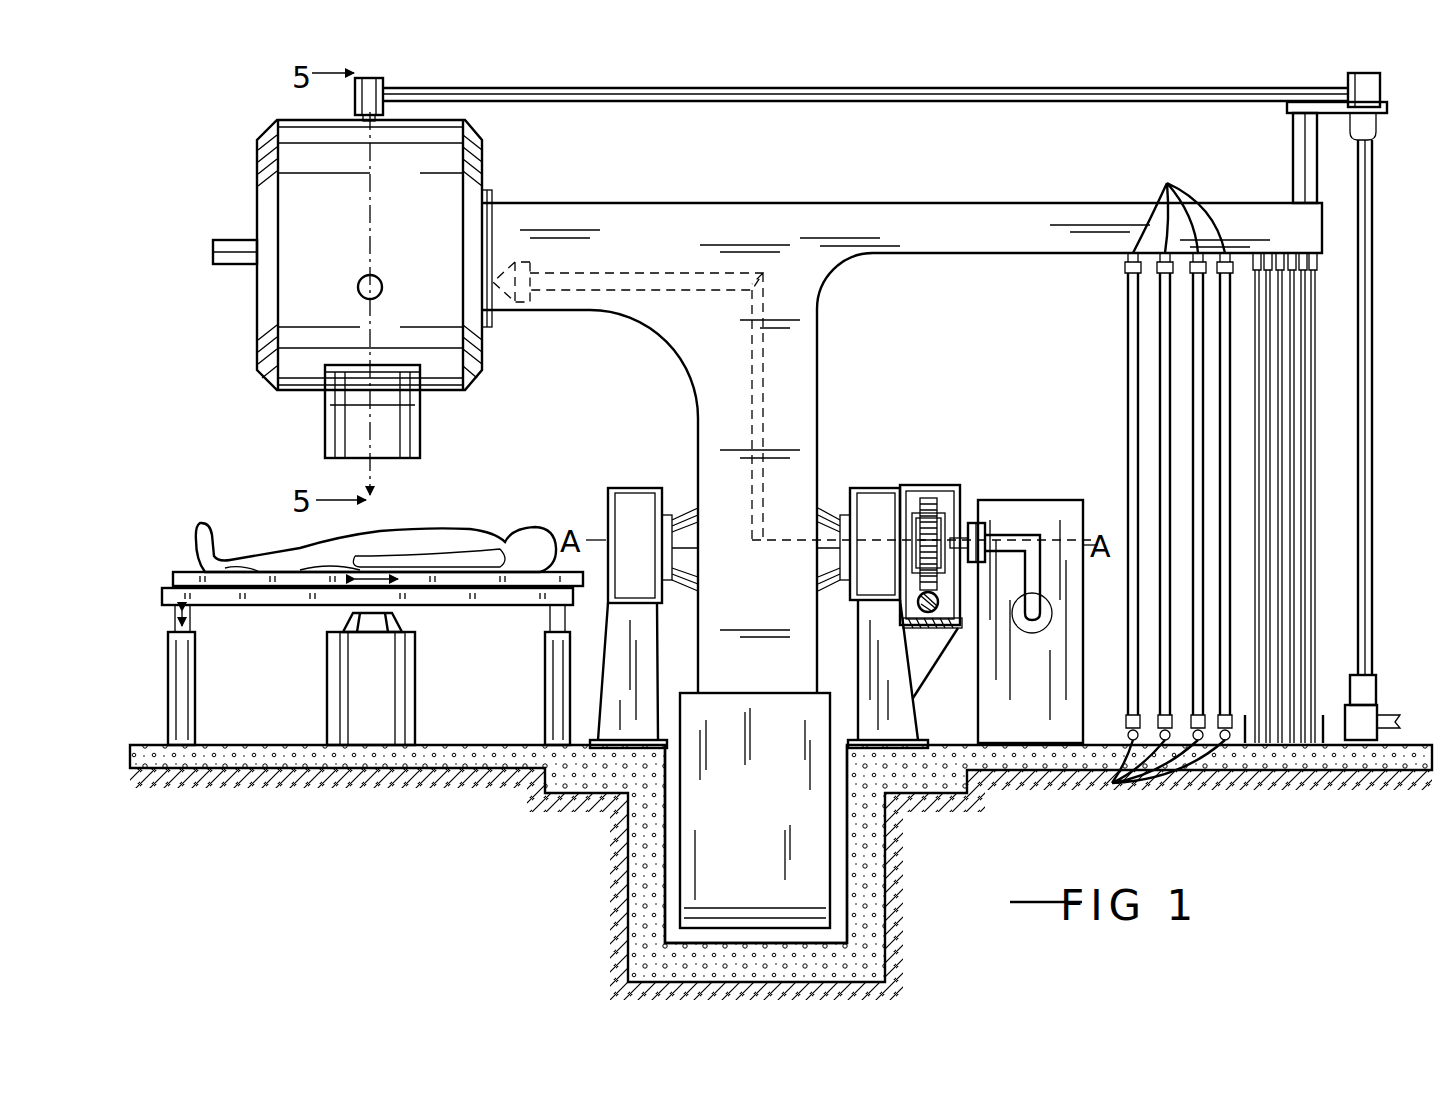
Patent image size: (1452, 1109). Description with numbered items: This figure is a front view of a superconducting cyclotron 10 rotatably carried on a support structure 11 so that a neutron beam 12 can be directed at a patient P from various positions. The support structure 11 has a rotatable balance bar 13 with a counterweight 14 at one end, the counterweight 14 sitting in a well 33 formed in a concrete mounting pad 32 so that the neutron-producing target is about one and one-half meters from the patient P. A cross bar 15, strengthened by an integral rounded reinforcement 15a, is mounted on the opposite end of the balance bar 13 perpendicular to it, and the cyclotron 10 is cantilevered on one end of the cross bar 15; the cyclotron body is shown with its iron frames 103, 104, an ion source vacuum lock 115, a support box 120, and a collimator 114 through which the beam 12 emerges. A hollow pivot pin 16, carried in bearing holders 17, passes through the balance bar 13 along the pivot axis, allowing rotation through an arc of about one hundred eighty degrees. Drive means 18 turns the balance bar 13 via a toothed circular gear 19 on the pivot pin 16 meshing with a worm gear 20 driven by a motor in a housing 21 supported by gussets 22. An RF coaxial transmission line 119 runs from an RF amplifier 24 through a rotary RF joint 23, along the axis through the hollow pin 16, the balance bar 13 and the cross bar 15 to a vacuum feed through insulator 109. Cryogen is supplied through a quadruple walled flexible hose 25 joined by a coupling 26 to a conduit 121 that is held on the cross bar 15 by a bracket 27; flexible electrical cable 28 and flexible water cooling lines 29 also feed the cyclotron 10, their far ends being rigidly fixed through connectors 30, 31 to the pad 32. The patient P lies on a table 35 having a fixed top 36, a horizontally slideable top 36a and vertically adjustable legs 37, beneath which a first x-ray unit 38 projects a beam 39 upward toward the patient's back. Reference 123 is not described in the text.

The superconducting cyclotron 10 is at (361, 286).
The support structure 11 is at (1382, 469).
The neutron beam 12 is at (366, 468).
The balance bar 13 is at (802, 406).
The counterweight 14 is at (778, 808).
The cross bar 15 is at (673, 212).
The rounded reinforcement 15a is at (658, 358).
The hollow pivot pin 16 is at (686, 520).
The holders 17 is at (636, 506).
The drive means 18 is at (951, 541).
The toothed circular gear 19 is at (928, 496).
The worm gear 20 is at (919, 606).
The housing 21 is at (962, 494).
The gussets 22 is at (908, 692).
The rotary RF joint 23 is at (976, 544).
The RF amplifier 24 is at (1040, 690).
The quadruple walled flexible hose 25 is at (1374, 382).
The coupling 26 is at (1383, 97).
The bracket 27 is at (1293, 160).
The flexible electrical cable 28 is at (1305, 314).
The flexible water cooling lines 29 is at (1278, 800).
The connector 30 is at (1156, 782).
The connector 31 is at (1356, 742).
The mounting pad 32 is at (416, 772).
The well 33 is at (876, 902).
The table 35 is at (332, 611).
The fixed top 36 is at (162, 594).
The slideable top 36a is at (178, 572).
The legs 37 is at (182, 690).
The first x-ray unit 38 is at (395, 690).
The beam 39 is at (396, 622).
The iron frame 103 is at (470, 172).
The iron frame 104 is at (264, 170).
The vacuum feed through insulator 109 is at (533, 262).
The collimator 114 is at (348, 390).
The ion source vacuum lock 115 is at (218, 240).
The RF coaxial transmission line 119 is at (702, 272).
The support box 120 is at (355, 97).
The conduit 121 is at (776, 100).
The aperture 123 is at (358, 287).
The patient P is at (456, 524).